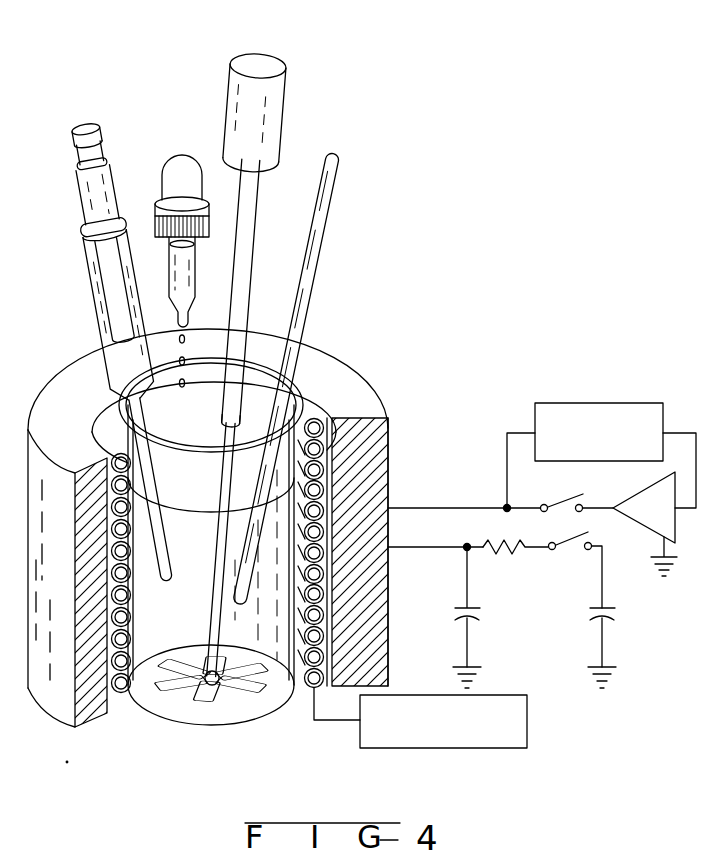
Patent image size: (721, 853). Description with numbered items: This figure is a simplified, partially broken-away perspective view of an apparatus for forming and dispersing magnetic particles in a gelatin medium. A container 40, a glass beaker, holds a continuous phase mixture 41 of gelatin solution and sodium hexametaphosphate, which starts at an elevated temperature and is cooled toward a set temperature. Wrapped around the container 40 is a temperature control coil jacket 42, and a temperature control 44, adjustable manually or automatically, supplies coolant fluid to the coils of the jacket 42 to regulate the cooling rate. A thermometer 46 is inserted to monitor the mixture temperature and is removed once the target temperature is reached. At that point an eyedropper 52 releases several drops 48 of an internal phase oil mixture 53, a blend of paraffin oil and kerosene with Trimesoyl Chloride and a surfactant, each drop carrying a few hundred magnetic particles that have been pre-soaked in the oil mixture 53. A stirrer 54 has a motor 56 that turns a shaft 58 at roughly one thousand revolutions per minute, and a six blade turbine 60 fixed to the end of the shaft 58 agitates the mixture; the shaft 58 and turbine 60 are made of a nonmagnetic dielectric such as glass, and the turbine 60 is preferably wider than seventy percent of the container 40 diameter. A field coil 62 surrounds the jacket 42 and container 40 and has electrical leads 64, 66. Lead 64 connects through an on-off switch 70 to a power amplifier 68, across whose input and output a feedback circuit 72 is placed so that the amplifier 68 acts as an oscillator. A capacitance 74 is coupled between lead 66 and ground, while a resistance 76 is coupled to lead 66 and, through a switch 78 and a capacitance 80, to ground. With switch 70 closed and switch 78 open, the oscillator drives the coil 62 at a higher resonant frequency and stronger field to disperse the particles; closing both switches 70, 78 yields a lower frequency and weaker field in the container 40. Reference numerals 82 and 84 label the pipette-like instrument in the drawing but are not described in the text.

The container 40 is at (200, 730).
The continuous phase mixture 41 is at (130, 697).
The temperature control coil jacket 42 is at (311, 692).
The temperature control 44 is at (527, 728).
The thermometer 46 is at (311, 292).
The drop 48 is at (184, 338).
The eyedropper 52 is at (157, 166).
The internal phase oil mixture 53 is at (190, 259).
The stirrer 54 is at (289, 83).
The motor 56 is at (230, 92).
The shaft 58 is at (214, 437).
The six blade turbine 60 is at (172, 646).
The field coil 62 is at (362, 428).
The electrical lead 64 is at (424, 506).
The electrical lead 66 is at (432, 550).
The power amplifier 68 is at (677, 523).
The on-off switch 70 is at (563, 496).
The feedback circuit 72 is at (535, 410).
The capacitance 74 is at (481, 618).
The resistance 76 is at (510, 556).
The switch 78 is at (576, 548).
The capacitance 80 is at (615, 618).
The pipette plunger 82 is at (92, 256).
The pipette barrel 84 is at (120, 334).